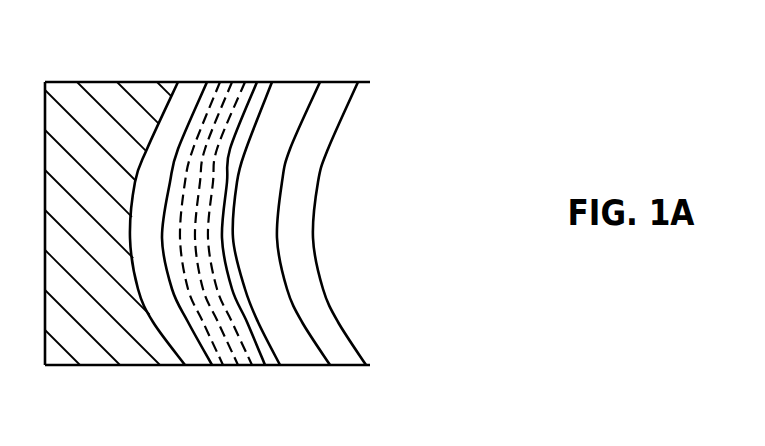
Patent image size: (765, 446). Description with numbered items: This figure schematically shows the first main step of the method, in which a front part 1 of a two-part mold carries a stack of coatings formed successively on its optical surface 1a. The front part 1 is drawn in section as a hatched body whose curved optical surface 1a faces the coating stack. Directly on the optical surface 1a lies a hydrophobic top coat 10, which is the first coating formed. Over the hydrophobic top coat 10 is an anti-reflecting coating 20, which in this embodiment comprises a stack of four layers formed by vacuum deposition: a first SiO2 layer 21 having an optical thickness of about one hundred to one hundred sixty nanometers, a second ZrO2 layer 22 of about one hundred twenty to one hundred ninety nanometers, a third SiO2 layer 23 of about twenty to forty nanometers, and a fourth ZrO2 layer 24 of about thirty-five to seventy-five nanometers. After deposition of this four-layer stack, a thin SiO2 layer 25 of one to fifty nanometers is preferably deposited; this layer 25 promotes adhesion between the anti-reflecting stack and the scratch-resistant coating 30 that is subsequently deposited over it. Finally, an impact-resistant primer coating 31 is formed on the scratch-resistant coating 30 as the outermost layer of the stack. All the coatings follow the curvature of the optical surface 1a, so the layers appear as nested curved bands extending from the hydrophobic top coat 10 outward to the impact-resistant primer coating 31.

The front part of a two-part mold 1 is at (112, 91).
The optical surface 1a is at (153, 133).
The hydrophobic top coat 10 is at (197, 91).
The anti-reflecting coating 20 is at (254, 224).
The first SiO2 layer 21 is at (220, 366).
The second ZrO2 layer 22 is at (240, 366).
The third SiO2 layer 23 is at (256, 366).
The fourth ZrO2 layer 24 is at (270, 366).
The thin SiO2 layer 25 is at (281, 367).
The scratch-resistant coating 30 is at (305, 92).
The impact-resistant primer coating 31 is at (347, 91).